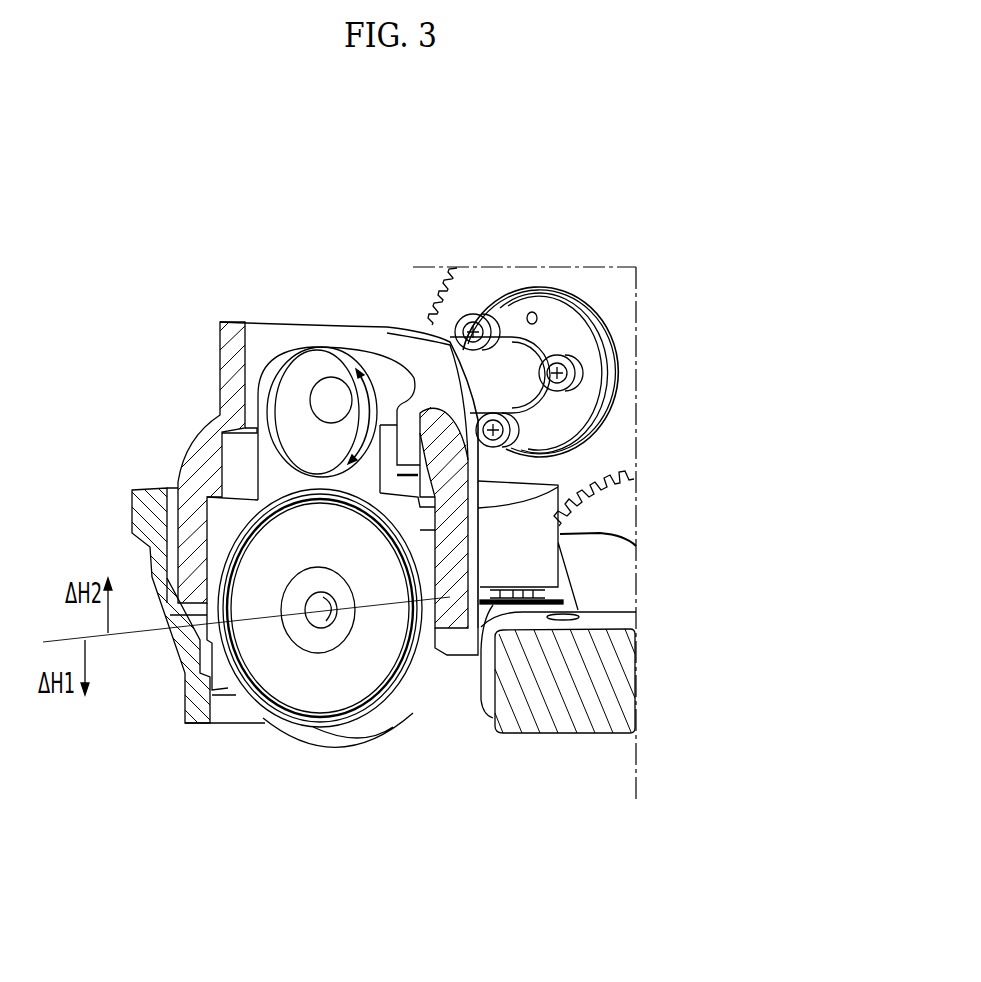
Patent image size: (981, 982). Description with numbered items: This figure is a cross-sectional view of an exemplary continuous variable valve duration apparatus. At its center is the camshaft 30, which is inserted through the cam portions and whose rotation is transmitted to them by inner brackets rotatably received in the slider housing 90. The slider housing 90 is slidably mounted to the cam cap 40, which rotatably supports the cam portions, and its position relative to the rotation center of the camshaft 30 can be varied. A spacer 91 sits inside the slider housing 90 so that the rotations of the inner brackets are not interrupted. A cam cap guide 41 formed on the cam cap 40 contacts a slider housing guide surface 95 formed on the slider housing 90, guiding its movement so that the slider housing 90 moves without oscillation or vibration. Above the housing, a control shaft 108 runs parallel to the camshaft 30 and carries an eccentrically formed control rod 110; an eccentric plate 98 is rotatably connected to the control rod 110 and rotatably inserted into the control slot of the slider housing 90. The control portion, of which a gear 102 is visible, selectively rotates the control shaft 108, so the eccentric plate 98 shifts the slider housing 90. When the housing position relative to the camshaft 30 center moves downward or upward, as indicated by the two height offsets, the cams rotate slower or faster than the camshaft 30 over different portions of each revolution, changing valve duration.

The camshaft 30 is at (315, 638).
The cam cap 40 is at (208, 378).
The cam cap guide 41 is at (388, 632).
The slider housing 90 is at (358, 735).
The spacer 91 is at (327, 690).
The slider housing guide surface 95 is at (452, 633).
The eccentric plate 98 is at (297, 405).
The gear 102 is at (603, 457).
The control shaft 108 is at (493, 368).
The control rod 110 is at (327, 397).